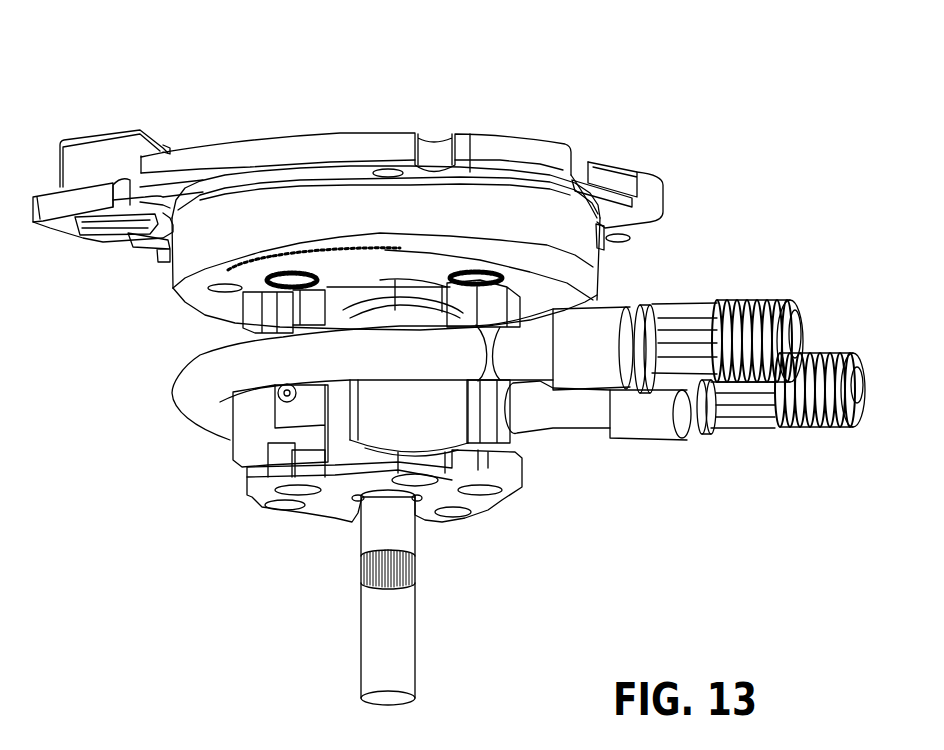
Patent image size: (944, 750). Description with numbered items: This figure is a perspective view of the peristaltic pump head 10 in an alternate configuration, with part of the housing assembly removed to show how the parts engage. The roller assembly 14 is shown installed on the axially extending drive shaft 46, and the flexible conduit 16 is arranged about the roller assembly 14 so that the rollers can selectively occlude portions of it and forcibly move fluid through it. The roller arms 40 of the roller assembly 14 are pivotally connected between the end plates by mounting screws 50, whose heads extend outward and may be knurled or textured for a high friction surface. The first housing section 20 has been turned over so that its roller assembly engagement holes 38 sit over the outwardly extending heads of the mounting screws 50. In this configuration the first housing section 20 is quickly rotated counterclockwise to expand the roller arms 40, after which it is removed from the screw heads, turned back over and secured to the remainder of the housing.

The peristaltic pump head 10 is at (588, 54).
The roller assembly 14 is at (503, 526).
The flexible conduit 16 is at (680, 476).
The first housing section 20 is at (323, 143).
The roller assembly engagement holes 38 is at (453, 278).
The roller arms 40 is at (392, 463).
The drive shaft 46 is at (402, 607).
The mounting screws 50 is at (263, 303).